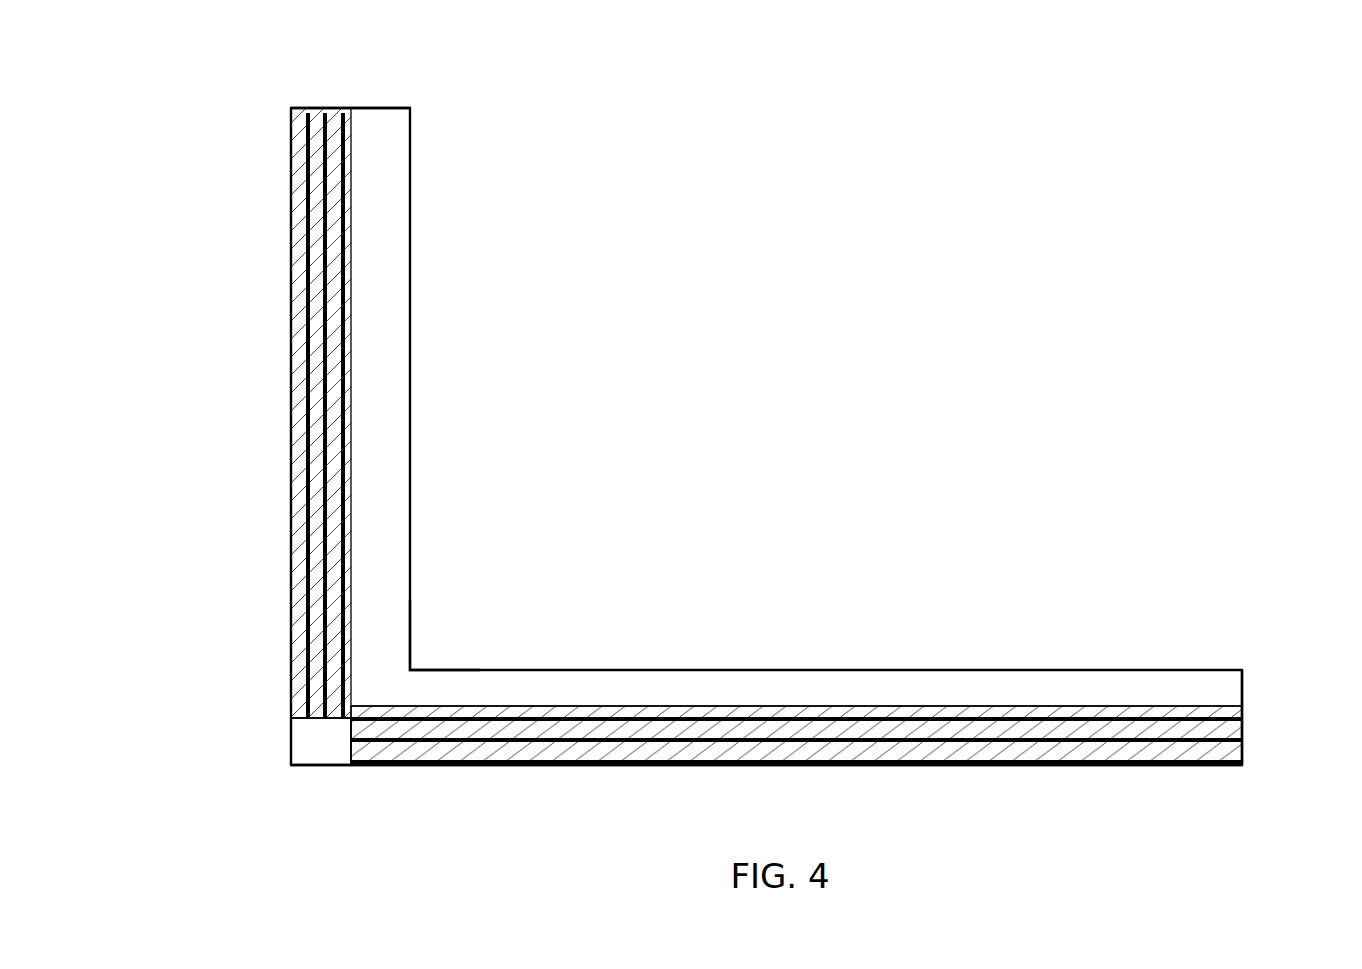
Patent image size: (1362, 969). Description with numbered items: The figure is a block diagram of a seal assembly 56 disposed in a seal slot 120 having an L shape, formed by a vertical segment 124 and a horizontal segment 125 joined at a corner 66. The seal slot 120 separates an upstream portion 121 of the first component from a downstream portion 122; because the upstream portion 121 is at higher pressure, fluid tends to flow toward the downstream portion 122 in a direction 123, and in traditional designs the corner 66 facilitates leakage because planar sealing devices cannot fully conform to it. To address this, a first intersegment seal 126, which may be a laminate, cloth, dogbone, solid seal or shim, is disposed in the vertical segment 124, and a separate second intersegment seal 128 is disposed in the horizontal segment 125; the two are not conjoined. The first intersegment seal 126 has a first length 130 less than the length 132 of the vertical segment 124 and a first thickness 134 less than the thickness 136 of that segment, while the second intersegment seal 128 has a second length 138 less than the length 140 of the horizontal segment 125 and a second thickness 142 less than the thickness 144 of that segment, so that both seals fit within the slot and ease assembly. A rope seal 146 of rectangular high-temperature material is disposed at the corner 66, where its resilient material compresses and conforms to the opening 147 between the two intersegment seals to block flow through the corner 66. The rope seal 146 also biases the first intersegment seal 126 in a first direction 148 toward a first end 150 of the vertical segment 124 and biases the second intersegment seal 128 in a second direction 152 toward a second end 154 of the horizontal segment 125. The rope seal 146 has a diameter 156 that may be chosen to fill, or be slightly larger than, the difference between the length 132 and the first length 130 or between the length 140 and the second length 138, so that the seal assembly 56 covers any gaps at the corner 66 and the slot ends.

The seal slot 120 is at (752, 448).
The upstream portion 121 is at (488, 512).
The downstream portion 122 is at (385, 842).
The direction 123 is at (545, 598).
The vertical segment 124 is at (410, 172).
The horizontal segment 125 is at (942, 670).
The first intersegment seal 126 is at (325, 295).
The second intersegment seal 128 is at (658, 704).
The first length 130 is at (234, 108).
The length 132 is at (197, 765).
The first thickness 134 is at (350, 93).
The thickness 136 is at (291, 48).
The second length 138 is at (1242, 765).
The length 140 is at (1242, 823).
The second thickness 142 is at (1250, 707).
The thickness 144 is at (1298, 670).
The rope seal 146 is at (307, 757).
The opening 147 is at (289, 737).
The first direction 148 is at (457, 382).
The first end 150 is at (388, 98).
The second direction 152 is at (763, 615).
The second end 154 is at (1242, 688).
The diameter 156 is at (291, 775).
The seal assembly 56 is at (384, 677).
The corner 66 is at (305, 765).